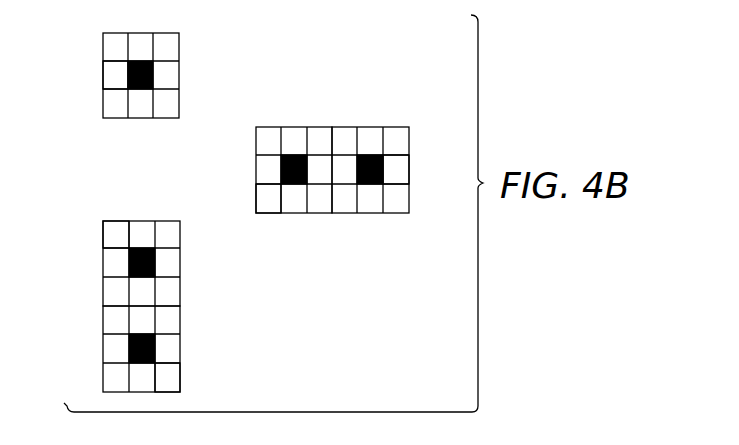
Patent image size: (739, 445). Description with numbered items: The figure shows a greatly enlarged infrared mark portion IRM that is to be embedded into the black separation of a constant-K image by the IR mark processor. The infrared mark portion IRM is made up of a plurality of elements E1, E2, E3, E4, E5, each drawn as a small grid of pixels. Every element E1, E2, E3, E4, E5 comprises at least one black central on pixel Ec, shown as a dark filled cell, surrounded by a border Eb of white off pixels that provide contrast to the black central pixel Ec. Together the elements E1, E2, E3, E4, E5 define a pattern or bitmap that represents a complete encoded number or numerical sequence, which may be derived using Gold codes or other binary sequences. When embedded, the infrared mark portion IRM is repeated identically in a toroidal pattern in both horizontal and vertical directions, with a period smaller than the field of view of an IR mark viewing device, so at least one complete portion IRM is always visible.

The infrared mark portion IRM is at (173, 167).
The element E1 is at (167, 44).
The element E2 is at (267, 138).
The element E3 is at (369, 138).
The element E4 is at (114, 263).
The element E5 is at (119, 348).
The border Eb is at (108, 77).
The black central on pixel Ec is at (155, 73).